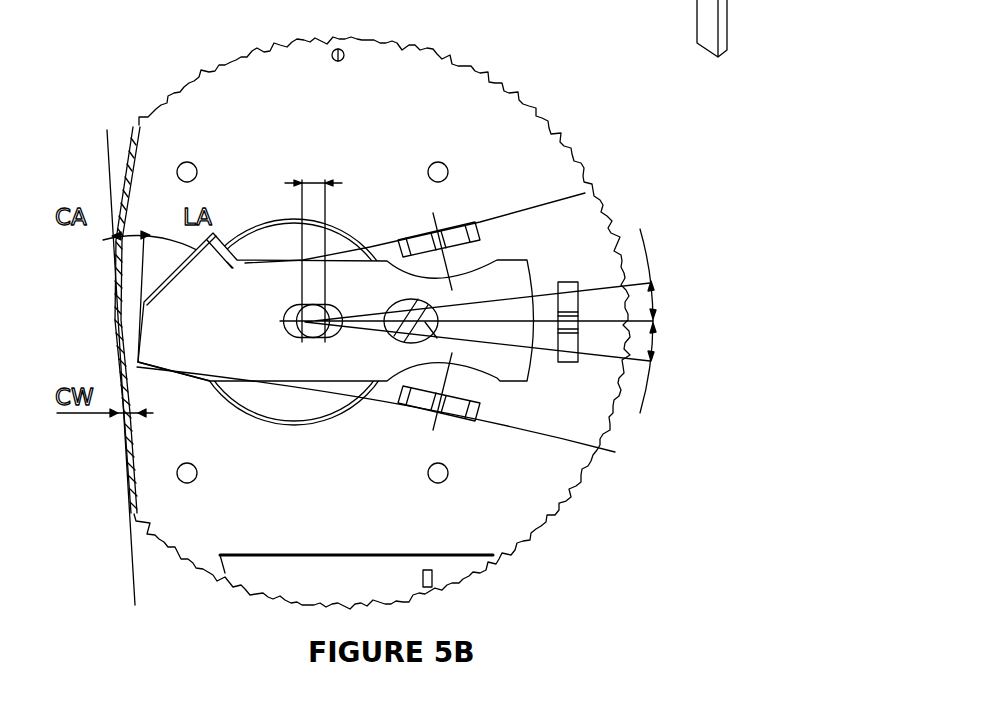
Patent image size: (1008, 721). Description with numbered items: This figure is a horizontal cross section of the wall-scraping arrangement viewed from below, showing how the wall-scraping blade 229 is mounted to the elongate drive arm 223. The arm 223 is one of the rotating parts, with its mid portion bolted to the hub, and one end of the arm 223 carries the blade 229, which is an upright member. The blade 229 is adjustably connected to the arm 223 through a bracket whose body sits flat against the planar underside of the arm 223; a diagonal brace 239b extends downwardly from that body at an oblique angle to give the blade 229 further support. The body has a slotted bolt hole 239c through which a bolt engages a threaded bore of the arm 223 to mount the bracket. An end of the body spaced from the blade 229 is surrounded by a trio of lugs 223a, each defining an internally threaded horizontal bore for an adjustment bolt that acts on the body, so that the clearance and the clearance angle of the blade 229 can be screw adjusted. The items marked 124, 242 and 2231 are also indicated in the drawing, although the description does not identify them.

The saw blade 124 is at (133, 148).
The elongate drive arm 223 is at (555, 422).
The lugs 223a is at (480, 235).
The wall-scraping blade 229 is at (140, 327).
The lower edge 242 is at (178, 378).
The diagonal brace 239b is at (425, 327).
The slotted bolt hole 239c is at (318, 317).
The pivot pin 2231 is at (320, 312).